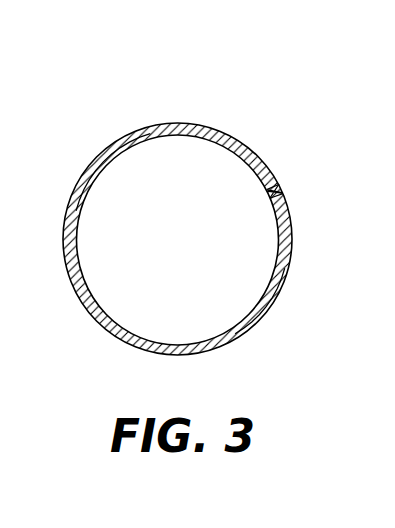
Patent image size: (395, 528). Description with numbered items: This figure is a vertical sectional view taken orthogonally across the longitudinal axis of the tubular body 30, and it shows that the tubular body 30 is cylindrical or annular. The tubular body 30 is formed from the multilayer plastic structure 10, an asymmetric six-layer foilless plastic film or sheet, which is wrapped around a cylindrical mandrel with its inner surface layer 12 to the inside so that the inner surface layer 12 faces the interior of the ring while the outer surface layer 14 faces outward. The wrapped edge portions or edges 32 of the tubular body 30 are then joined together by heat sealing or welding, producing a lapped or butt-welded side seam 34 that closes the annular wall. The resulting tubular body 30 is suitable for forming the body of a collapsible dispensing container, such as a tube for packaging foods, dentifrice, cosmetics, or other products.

The multilayer plastic structure 10 is at (72, 199).
The inner surface layer 12 is at (101, 307).
The outer surface layer 14 is at (238, 146).
The tubular body 30 is at (137, 122).
The edges 32 is at (271, 188).
The side seam 34 is at (281, 191).